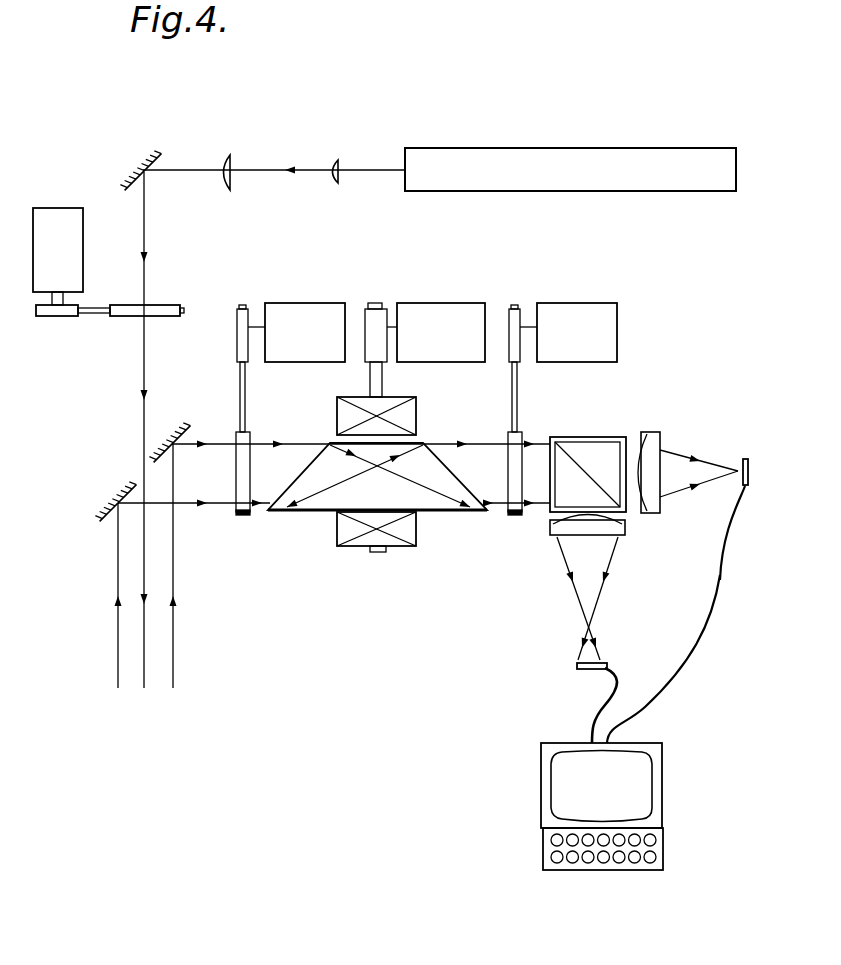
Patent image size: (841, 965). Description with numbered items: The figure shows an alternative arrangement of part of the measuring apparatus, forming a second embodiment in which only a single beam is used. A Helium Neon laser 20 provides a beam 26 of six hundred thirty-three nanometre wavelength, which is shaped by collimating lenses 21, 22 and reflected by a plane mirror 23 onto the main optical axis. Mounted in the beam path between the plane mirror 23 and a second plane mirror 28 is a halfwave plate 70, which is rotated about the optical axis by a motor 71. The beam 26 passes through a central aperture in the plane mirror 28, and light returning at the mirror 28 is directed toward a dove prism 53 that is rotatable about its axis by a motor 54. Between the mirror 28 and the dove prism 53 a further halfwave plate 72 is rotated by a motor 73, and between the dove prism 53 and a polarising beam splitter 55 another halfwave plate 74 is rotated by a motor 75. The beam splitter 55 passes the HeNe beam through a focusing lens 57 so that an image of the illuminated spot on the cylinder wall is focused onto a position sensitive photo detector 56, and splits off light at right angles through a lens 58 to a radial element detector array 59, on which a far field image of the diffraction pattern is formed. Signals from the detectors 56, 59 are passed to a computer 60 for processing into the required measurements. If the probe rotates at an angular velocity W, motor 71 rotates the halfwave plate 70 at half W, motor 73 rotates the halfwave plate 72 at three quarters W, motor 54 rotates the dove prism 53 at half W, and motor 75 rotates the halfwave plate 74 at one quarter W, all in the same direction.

The Helium Neon laser 20 is at (543, 153).
The collimating lens 21 is at (338, 160).
The collimating lens 22 is at (230, 155).
The plane mirror 23 is at (140, 165).
The beam 26 is at (144, 238).
The plane mirror 28 is at (117, 502).
The dove prism 53 is at (327, 507).
The motor 54 is at (432, 312).
The polarising beam splitter 55 is at (595, 438).
The position sensitive photo detector 56 is at (743, 458).
The focusing lens 57 is at (653, 435).
The lens 58 is at (625, 533).
The radial element detector array 59 is at (577, 667).
The computer 60 is at (542, 800).
The halfwave plate 70 is at (177, 305).
The motor 71 is at (70, 263).
The halfwave plate 72 is at (245, 517).
The motor 73 is at (305, 310).
The halfwave plate 74 is at (507, 517).
The motor 75 is at (572, 310).